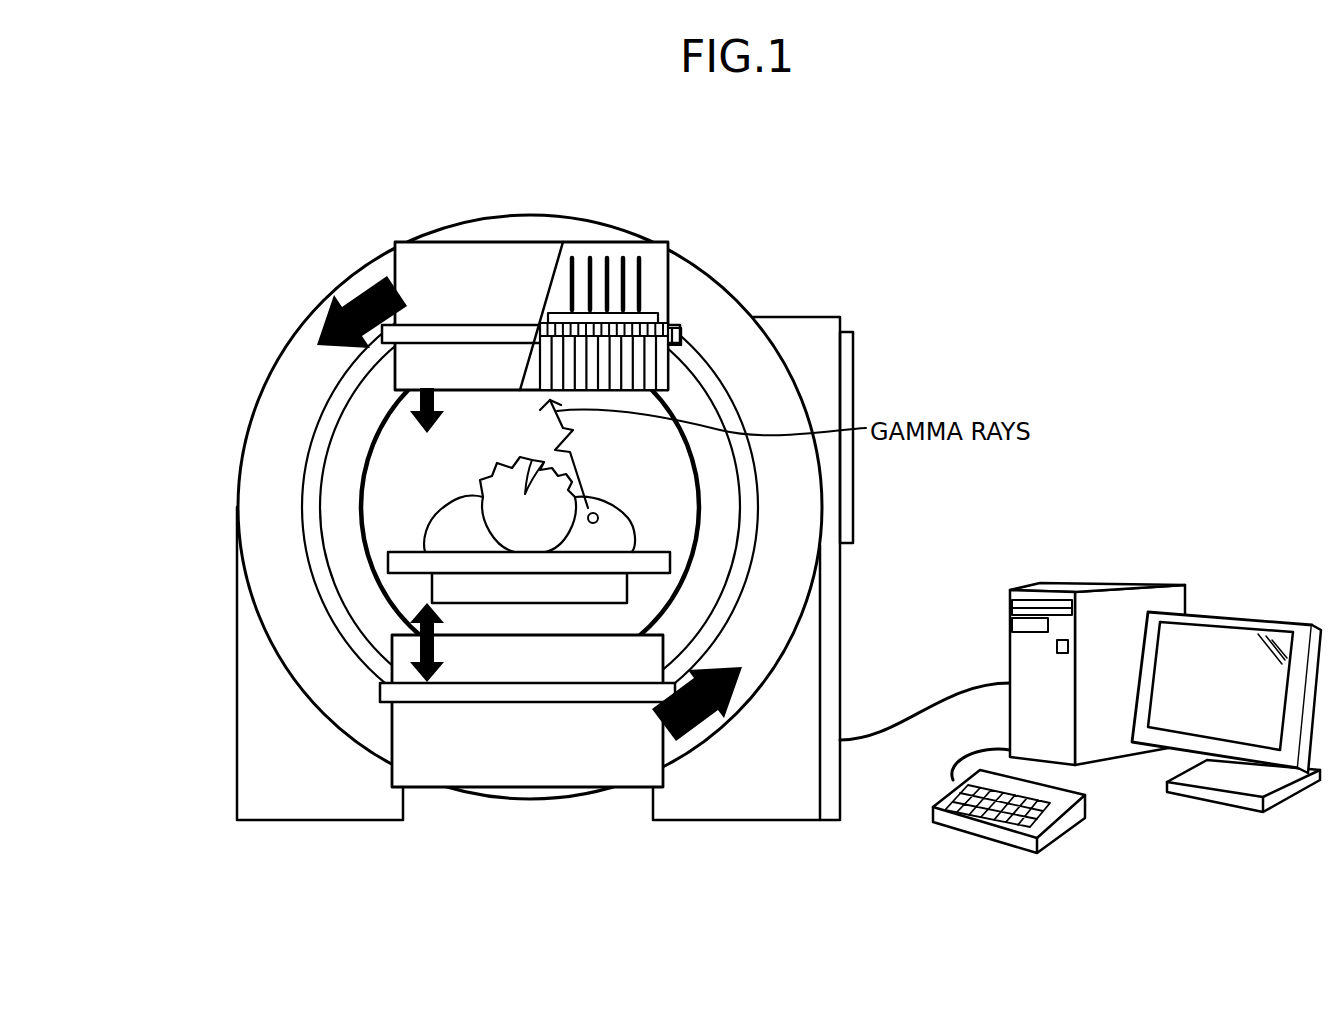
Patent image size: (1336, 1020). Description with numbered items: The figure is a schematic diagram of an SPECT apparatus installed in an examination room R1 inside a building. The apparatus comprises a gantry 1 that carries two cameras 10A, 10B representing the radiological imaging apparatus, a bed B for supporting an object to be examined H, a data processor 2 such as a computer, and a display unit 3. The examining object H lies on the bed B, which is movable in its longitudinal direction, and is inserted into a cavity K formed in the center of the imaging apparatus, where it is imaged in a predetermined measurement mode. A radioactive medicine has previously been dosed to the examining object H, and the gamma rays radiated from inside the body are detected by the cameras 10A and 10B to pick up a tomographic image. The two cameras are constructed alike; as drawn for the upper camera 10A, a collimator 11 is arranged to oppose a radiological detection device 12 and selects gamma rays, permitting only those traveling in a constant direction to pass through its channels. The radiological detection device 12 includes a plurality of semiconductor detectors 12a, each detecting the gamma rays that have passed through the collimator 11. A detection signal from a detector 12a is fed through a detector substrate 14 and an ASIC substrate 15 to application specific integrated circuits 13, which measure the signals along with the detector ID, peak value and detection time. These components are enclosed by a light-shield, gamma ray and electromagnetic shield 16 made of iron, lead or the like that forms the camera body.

The gantry 1 is at (286, 385).
The camera 10A is at (480, 241).
The camera 10B is at (528, 762).
The light-shield/gamma ray and electromagnetic shield 16 is at (505, 243).
The ASIC substrate 15 is at (585, 300).
The application specific integrated circuits (ASIC's) 13 is at (612, 298).
The detector substrate 14 is at (650, 303).
The collimator 11 is at (668, 378).
The radiological detection device 12 is at (672, 325).
The detector 12a is at (660, 337).
The object to be examined H is at (440, 532).
The cavity K is at (665, 493).
The bed B is at (387, 560).
The examination room R1 is at (1092, 236).
The data processor 2 is at (1093, 588).
The display unit 3 is at (1242, 618).